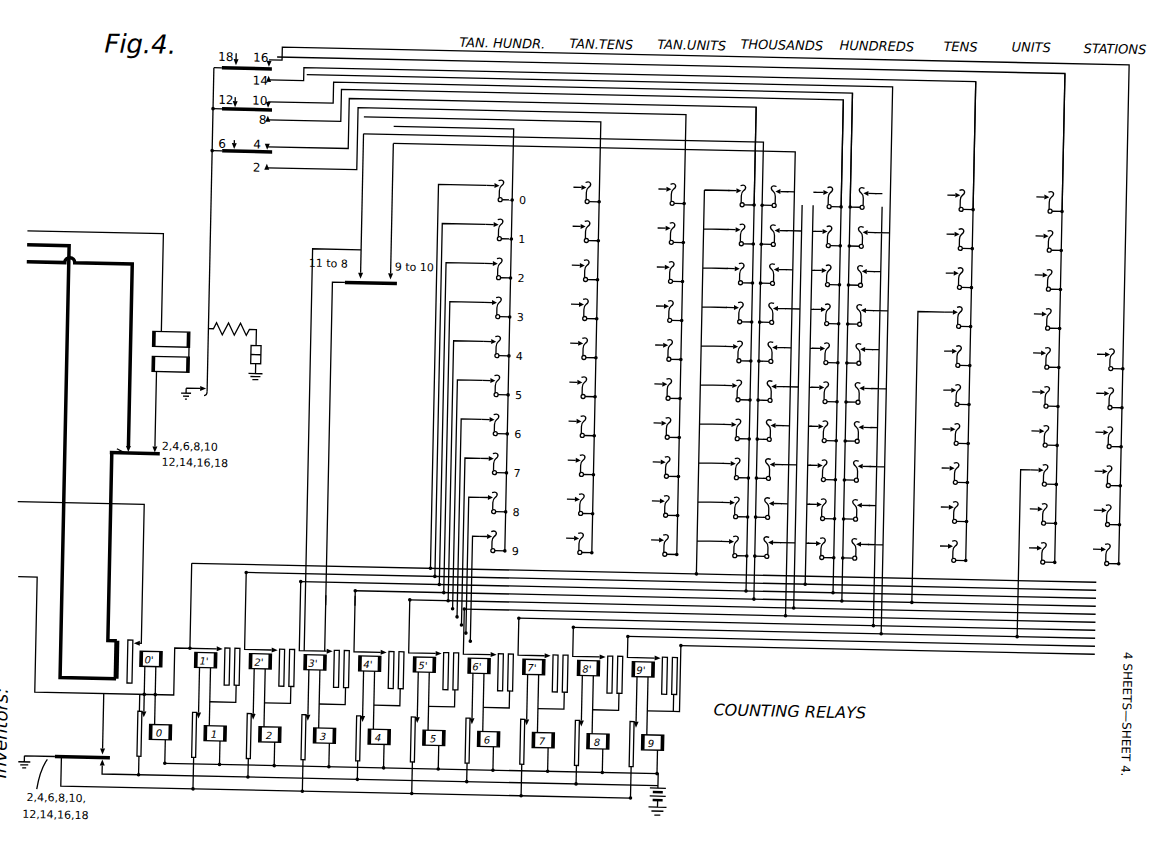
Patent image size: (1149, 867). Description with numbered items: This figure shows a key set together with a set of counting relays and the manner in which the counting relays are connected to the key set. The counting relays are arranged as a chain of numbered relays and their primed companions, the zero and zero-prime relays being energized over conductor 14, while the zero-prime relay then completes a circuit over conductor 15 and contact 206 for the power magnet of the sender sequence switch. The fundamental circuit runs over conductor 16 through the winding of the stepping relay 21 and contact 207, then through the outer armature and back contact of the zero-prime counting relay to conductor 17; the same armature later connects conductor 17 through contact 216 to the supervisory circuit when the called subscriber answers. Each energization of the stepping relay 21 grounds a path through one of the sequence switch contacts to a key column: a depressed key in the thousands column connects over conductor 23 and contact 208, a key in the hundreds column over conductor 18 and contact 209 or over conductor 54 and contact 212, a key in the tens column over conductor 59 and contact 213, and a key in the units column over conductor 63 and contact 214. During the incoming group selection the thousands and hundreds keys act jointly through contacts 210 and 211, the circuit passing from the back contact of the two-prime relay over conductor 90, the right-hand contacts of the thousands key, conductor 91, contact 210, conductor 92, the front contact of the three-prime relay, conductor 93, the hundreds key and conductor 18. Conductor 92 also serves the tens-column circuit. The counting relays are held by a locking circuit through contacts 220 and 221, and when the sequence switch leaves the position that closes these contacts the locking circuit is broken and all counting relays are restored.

The conductor 14 is at (40, 580).
The conductor 15 is at (148, 527).
The conductor 16 is at (126, 242).
The conductor 17 is at (64, 385).
The conductor 18 is at (837, 130).
The stepping relay 21 is at (170, 345).
The conductor 23 is at (752, 114).
The conductor 54 is at (846, 157).
The conductor 59 is at (969, 148).
The conductor 63 is at (1058, 173).
The conductor 90 is at (310, 332).
The conductor 91 is at (388, 192).
The conductor 92 is at (336, 601).
The conductor 93 is at (364, 606).
The contact 206 is at (108, 752).
The contact 207 is at (158, 457).
The contact 208 is at (252, 125).
The contact 209 is at (268, 116).
The contact 210 is at (395, 288).
The contact 211 is at (352, 272).
The contact 212 is at (243, 91).
The contact 213 is at (270, 76).
The contact 214 is at (265, 70).
The contact 216 is at (118, 458).
The contact 220 is at (36, 752).
The contact 221 is at (113, 772).